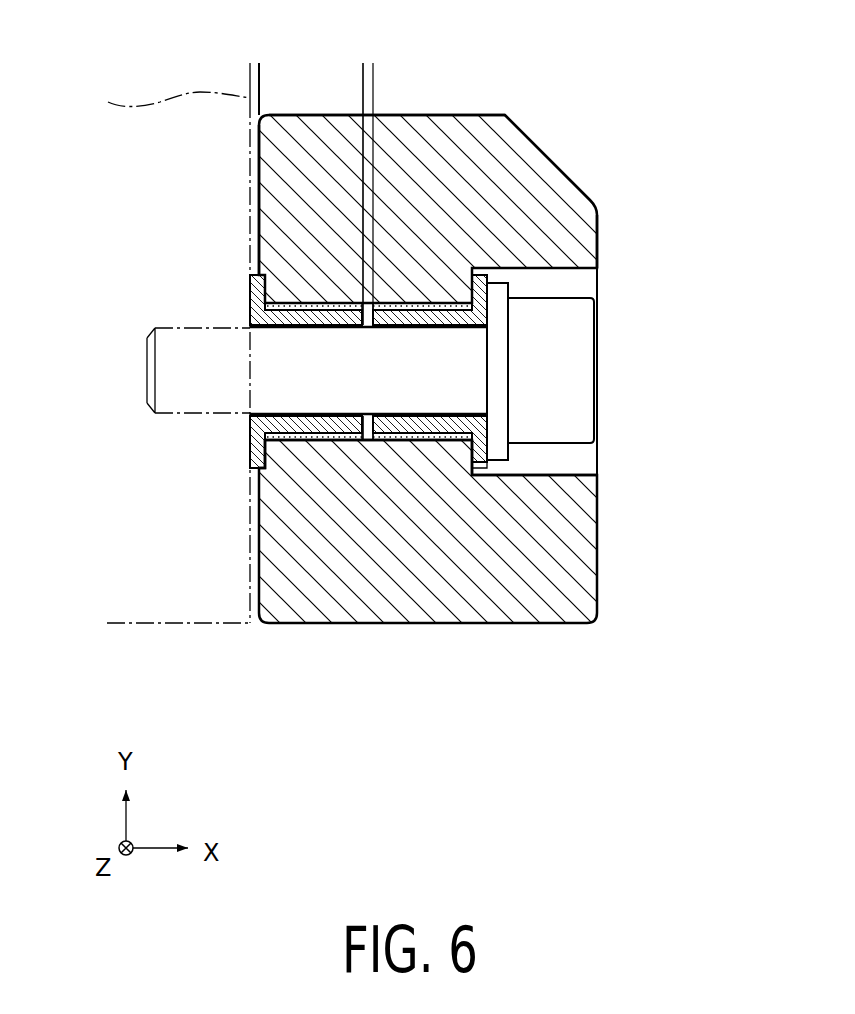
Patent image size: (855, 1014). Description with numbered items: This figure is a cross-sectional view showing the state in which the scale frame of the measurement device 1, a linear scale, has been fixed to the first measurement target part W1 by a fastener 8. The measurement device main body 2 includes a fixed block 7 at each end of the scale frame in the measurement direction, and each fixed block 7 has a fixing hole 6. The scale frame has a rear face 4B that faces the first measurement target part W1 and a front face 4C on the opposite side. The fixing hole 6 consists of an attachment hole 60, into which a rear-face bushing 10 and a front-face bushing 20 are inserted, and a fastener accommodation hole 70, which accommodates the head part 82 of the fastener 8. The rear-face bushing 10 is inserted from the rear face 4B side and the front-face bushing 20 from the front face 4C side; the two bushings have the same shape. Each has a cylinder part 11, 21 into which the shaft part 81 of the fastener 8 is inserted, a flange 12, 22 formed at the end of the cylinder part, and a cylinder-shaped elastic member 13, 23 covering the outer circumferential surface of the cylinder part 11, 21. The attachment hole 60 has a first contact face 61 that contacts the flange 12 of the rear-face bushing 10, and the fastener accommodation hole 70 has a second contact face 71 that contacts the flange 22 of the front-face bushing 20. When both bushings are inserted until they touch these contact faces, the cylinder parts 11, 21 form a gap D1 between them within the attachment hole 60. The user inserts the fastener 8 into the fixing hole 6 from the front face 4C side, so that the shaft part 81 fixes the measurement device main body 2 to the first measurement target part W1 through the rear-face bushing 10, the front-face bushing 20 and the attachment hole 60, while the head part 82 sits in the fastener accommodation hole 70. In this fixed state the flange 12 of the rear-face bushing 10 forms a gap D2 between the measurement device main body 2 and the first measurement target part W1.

The measurement device 1 is at (668, 128).
The measurement device main body 2 is at (566, 148).
The rear face 4B is at (258, 152).
The front face 4C is at (598, 232).
The fixing hole 6 is at (607, 470).
The fixed block 7 is at (447, 115).
The fastener 8 is at (416, 380).
The rear-face bushing 10 is at (275, 355).
The cylinder part 11 is at (294, 416).
The flange 12 is at (249, 310).
The elastic member 13 is at (281, 308).
The front-face bushing 20 is at (520, 360).
The cylinder part 21 is at (408, 416).
The flange 22 is at (489, 283).
The elastic member 23 is at (397, 310).
The attachment hole 60 is at (365, 443).
The first contact face 61 is at (249, 458).
The fastener accommodation hole 70 is at (530, 475).
The second contact face 71 is at (498, 467).
The shaft part 81 is at (167, 407).
The head part 82 is at (591, 347).
The gap D1 is at (400, 80).
The gap D2 is at (290, 80).
The first measurement target part W1 is at (177, 625).